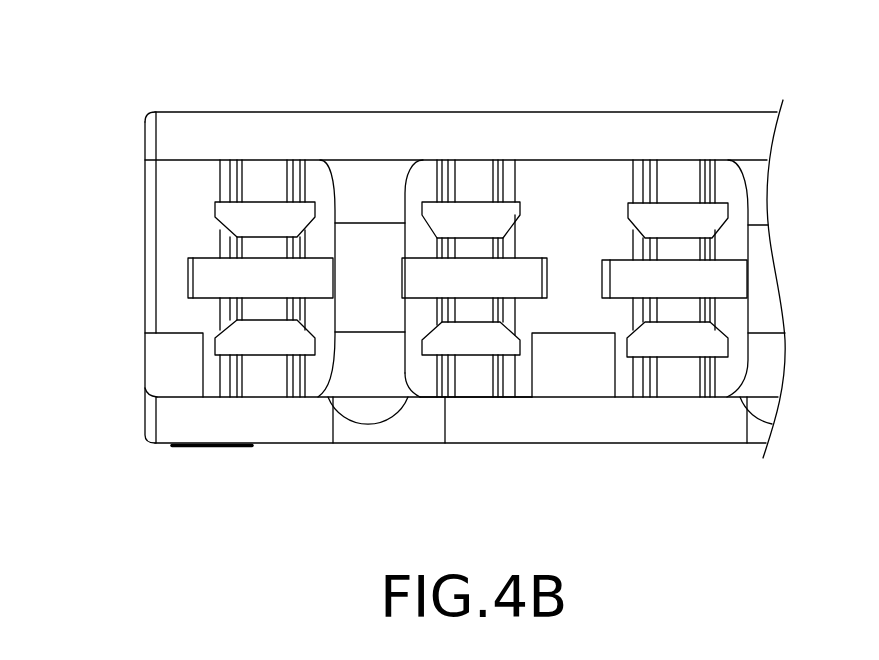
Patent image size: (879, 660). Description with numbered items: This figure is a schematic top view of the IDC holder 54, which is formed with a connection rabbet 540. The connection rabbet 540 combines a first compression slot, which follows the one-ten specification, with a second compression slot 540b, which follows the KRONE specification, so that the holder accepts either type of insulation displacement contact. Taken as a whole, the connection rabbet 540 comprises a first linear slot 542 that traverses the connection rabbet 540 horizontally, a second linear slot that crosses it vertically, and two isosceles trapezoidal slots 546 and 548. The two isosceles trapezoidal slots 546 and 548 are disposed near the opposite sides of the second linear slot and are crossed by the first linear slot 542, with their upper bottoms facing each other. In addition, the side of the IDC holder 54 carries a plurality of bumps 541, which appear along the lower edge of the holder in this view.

The IDC holder 54 is at (172, 193).
The connection rabbet 540 is at (493, 219).
The second compression slot 540b is at (480, 213).
The bumps 541 is at (365, 417).
The first linear slot 542 is at (450, 377).
The isosceles trapezoidal slot 546 is at (428, 212).
The isosceles trapezoidal slot 548 is at (425, 347).